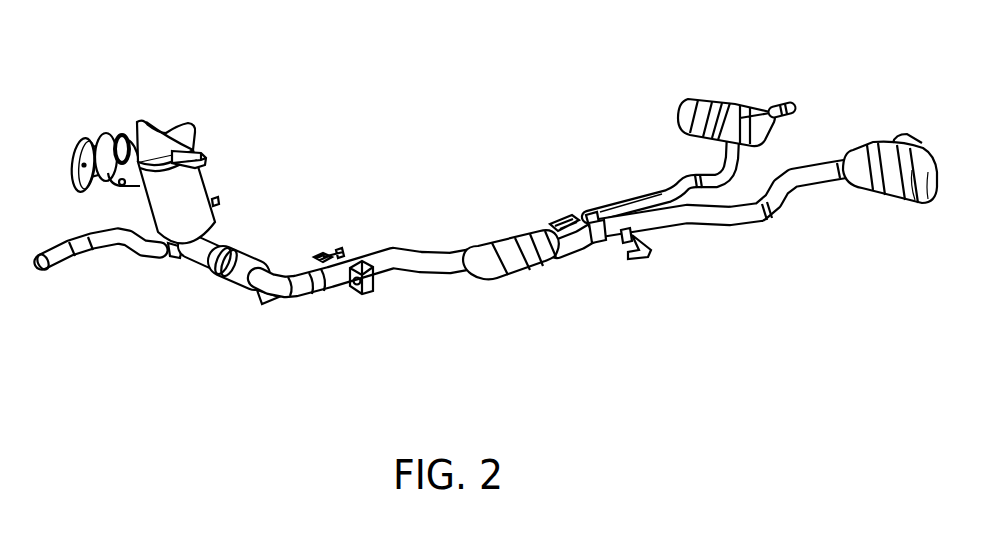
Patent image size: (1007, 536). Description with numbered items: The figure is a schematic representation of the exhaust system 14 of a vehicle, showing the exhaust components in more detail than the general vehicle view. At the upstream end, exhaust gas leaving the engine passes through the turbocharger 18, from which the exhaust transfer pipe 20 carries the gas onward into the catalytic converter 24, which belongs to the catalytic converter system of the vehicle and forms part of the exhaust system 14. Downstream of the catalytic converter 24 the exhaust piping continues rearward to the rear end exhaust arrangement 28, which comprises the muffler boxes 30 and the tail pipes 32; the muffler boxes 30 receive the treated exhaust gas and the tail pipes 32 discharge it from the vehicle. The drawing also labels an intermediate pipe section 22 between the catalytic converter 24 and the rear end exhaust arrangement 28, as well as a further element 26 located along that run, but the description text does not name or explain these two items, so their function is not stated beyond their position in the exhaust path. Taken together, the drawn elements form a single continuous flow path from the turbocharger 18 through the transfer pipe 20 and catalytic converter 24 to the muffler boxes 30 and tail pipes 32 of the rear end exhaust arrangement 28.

The exhaust system 14 is at (403, 74).
The turbocharger 18 is at (100, 134).
The exhaust transfer pipe 20 is at (122, 134).
The front exhaust pipe section 22 is at (320, 316).
The catalytic converter 24 is at (193, 144).
The center muffler 26 is at (493, 242).
The rear end exhaust arrangement 28 is at (727, 236).
The muffler boxes 30 is at (703, 95).
The tail pipes 32 is at (789, 104).